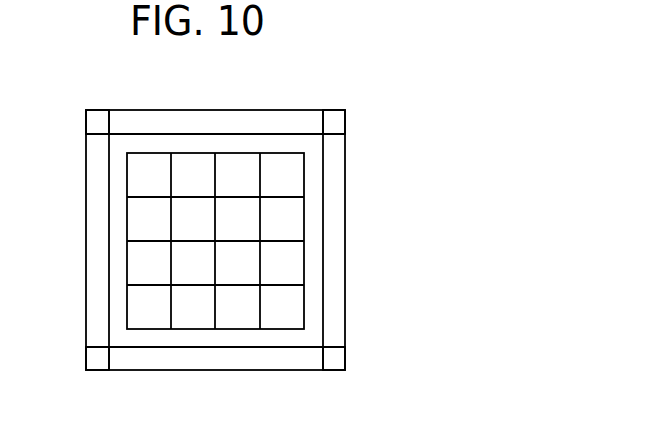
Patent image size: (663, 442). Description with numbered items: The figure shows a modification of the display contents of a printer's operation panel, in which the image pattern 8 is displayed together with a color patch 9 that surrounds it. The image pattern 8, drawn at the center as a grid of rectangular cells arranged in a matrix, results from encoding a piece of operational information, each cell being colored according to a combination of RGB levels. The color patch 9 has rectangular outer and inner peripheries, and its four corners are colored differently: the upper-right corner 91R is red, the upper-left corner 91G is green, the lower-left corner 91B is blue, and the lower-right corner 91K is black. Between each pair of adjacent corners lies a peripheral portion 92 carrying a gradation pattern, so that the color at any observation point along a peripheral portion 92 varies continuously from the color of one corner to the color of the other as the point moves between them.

The image pattern 8 is at (190, 153).
The color patch 9 is at (345, 307).
The peripheral portion 92 is at (95, 203).
The upper-left corner 91G is at (98, 118).
The upper-right corner 91R is at (333, 118).
The lower-left corner 91B is at (98, 363).
The lower-right corner 91K is at (333, 362).